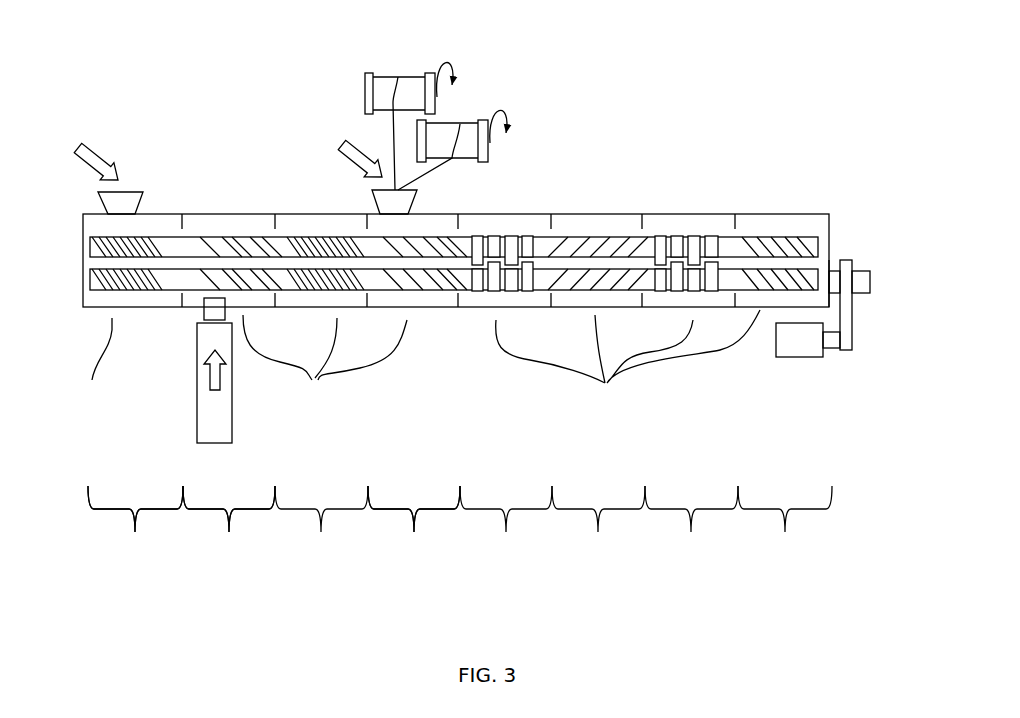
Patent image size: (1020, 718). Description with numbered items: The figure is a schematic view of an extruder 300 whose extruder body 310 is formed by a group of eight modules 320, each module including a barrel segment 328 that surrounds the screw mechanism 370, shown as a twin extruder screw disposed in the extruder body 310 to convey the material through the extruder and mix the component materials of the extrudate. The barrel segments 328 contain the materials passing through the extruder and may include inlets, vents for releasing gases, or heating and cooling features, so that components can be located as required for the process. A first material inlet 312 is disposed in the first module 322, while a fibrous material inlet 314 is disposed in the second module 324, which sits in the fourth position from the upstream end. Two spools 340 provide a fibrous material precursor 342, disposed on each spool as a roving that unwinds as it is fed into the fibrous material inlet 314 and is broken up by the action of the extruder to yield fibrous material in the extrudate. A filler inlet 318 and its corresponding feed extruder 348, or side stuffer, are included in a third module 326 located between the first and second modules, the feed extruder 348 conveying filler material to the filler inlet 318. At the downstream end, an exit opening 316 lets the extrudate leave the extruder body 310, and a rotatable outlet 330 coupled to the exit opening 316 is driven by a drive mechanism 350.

The extruder 300 is at (740, 158).
The extruder body 310 is at (517, 213).
The first material inlet 312 is at (153, 184).
The fibrous material inlet 314 is at (365, 190).
The exit opening 316 is at (817, 295).
The filler inlet 318 is at (197, 313).
The modules 320 is at (460, 526).
The first module 322 is at (135, 540).
The second module 324 is at (414, 540).
The third module 326 is at (229, 540).
The barrel segment 328 is at (417, 365).
The rotatable outlet 330 is at (863, 278).
The spool 340 is at (402, 58).
The fibrous material precursor 342 is at (388, 137).
The feed extruder 348 is at (240, 388).
The drive mechanism 350 is at (825, 380).
The screw mechanism 370 is at (83, 253).